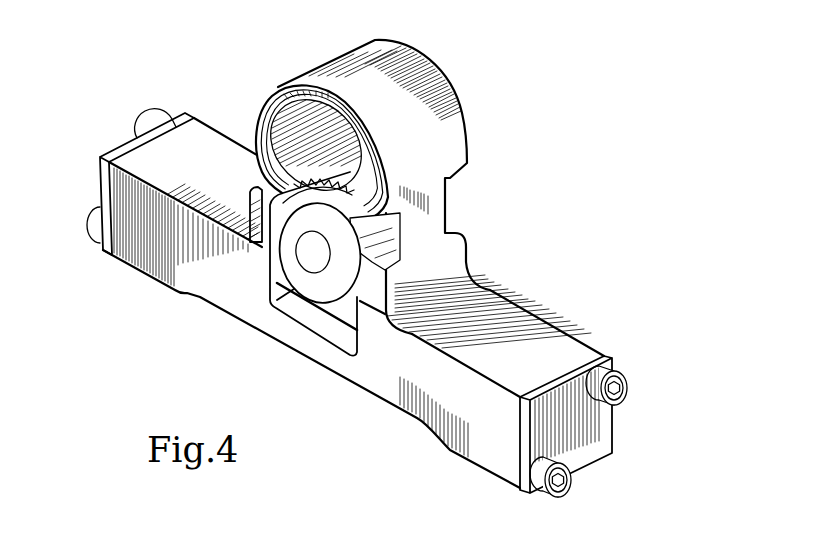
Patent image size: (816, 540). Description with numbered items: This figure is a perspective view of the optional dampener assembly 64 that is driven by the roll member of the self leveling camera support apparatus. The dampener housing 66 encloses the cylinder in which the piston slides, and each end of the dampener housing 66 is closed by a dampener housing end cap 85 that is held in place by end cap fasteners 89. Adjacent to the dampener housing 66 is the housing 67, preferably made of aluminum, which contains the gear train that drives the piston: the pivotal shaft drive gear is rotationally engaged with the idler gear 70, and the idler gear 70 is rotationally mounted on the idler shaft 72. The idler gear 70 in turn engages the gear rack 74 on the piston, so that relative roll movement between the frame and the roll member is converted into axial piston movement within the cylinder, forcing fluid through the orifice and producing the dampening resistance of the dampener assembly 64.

The dampener assembly 64 is at (362, 274).
The dampener housing 66 is at (470, 410).
The housing 67 is at (447, 112).
The idler gear 70 is at (313, 185).
The idler shaft 72 is at (310, 253).
The gear rack 74 is at (350, 310).
The dampener housing end cap 85 is at (100, 174).
The end cap fasteners 89 is at (147, 113).